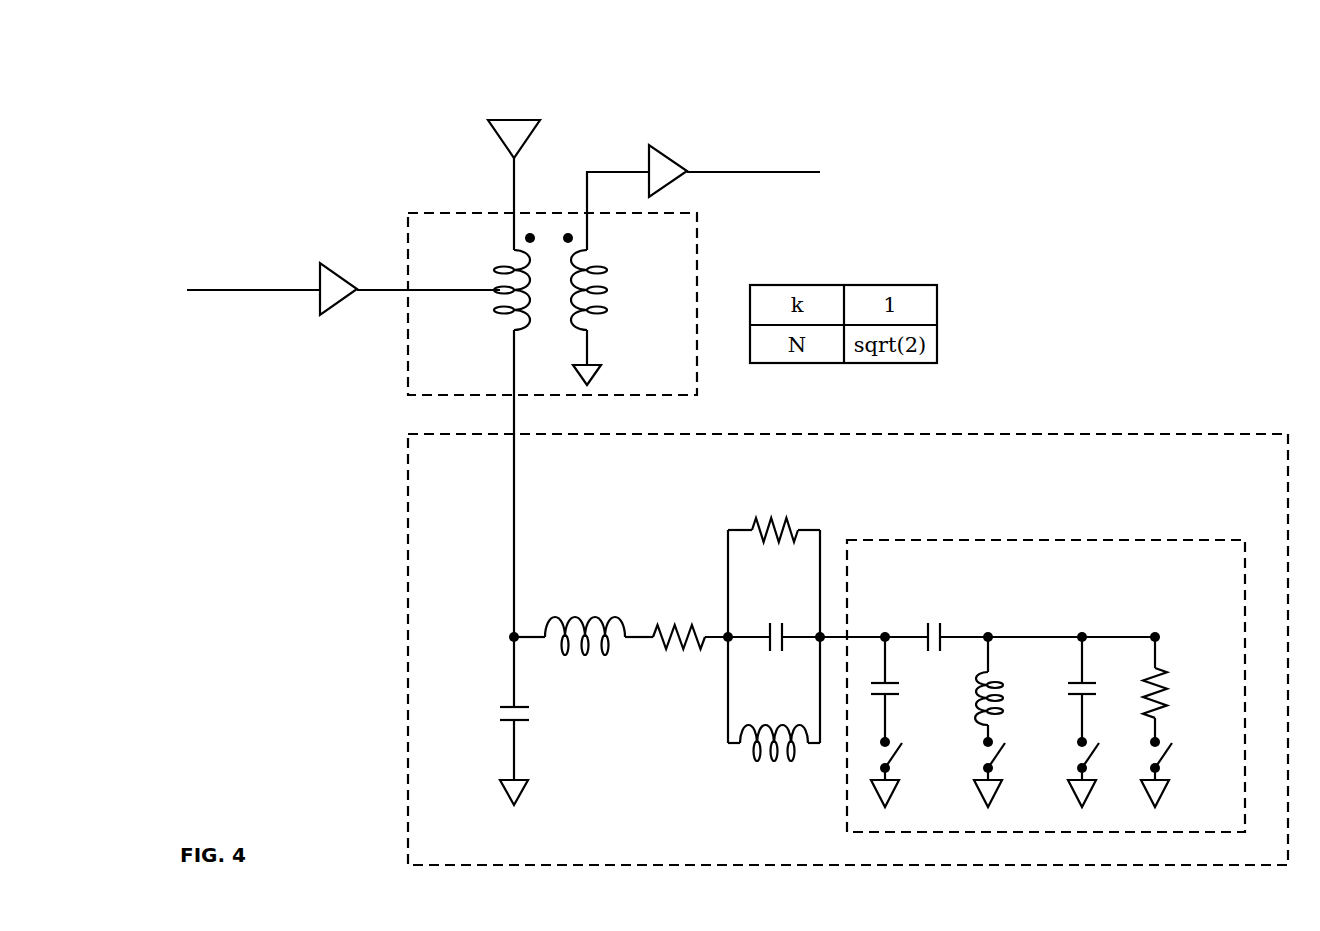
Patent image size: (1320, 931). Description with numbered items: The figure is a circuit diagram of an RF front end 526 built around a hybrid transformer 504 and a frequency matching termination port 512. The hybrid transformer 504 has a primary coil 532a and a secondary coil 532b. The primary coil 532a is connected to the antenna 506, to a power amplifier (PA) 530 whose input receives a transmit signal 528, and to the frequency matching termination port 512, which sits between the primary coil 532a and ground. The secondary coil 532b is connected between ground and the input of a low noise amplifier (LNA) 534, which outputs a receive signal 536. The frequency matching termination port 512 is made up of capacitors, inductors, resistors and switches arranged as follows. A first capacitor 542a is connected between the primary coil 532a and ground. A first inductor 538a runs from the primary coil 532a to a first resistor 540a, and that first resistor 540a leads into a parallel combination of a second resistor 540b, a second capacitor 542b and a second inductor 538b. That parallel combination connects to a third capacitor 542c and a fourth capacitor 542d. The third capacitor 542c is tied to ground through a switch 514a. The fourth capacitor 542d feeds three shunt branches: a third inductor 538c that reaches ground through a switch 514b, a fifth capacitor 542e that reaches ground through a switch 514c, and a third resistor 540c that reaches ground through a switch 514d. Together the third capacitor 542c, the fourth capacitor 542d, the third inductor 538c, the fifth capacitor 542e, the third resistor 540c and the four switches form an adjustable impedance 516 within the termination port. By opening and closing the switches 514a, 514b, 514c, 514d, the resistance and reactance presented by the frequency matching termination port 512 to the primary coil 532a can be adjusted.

The RF front end 526 is at (1040, 111).
The antenna 506 is at (515, 119).
The transmit signal 528 is at (240, 289).
The power amplifier (PA) 530 is at (342, 275).
The hybrid transformer 504 is at (437, 213).
The primary coil 532a is at (497, 312).
The secondary coil 532b is at (598, 311).
The low noise amplifier (LNA) 534 is at (678, 183).
The receive signal 536 is at (764, 171).
The frequency matching termination port 512 is at (848, 649).
The adjustable impedance 516 is at (1046, 686).
The inductor L0 538a is at (580, 622).
The resistor R0 540a is at (668, 624).
The resistor R1 540b is at (762, 522).
The capacitor C1 542b is at (774, 624).
The inductor L1 538b is at (782, 738).
The capacitor Cb 542d is at (945, 631).
The capacitor Ca 542c is at (893, 696).
The inductor L2 538c is at (998, 687).
The capacitor C2 542e is at (1088, 684).
The resistor R2 540c is at (1167, 676).
The switch 514a is at (901, 746).
The switch 514b is at (1004, 746).
The switch 514c is at (1098, 746).
The switch 514d is at (1171, 746).
The capacitor C0 542a is at (505, 722).